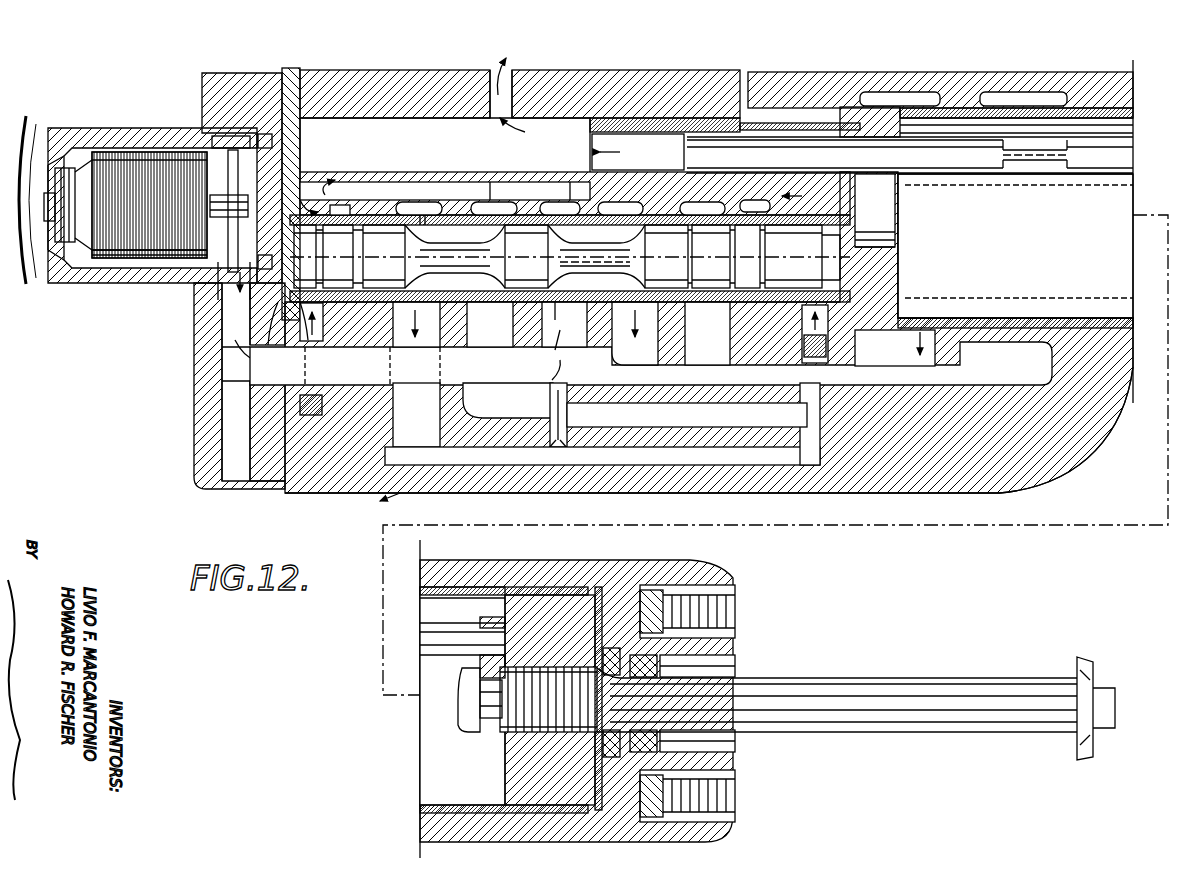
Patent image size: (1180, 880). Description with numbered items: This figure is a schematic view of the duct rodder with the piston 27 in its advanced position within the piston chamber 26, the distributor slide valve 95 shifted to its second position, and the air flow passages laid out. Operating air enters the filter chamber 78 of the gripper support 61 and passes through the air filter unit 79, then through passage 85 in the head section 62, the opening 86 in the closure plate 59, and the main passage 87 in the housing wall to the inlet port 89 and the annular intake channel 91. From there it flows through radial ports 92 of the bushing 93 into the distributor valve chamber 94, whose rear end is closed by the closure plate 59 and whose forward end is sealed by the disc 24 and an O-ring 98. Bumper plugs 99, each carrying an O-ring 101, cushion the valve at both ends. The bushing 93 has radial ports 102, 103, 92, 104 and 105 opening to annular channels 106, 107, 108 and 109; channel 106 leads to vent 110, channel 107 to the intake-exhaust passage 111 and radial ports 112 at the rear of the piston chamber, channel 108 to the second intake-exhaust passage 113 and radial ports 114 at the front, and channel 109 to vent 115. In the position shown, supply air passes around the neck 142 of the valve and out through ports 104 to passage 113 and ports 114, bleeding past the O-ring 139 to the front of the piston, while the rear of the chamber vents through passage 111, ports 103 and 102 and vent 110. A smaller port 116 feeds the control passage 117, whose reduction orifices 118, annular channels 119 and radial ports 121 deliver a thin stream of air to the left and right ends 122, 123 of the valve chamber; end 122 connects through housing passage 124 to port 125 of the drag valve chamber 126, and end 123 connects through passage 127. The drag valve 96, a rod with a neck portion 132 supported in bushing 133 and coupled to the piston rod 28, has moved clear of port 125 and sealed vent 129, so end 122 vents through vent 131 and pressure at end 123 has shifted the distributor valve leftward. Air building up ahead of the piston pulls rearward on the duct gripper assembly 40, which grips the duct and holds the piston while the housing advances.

The disc 24 is at (905, 262).
The piston chamber 26 is at (1128, 205).
The piston 27 is at (505, 772).
The piston rod 28 is at (872, 690).
The duct gripper assembly 40 is at (1078, 755).
The closure plate 59 is at (262, 72).
The gripper support 61 is at (82, 283).
The head section 62 is at (194, 438).
The filter chamber 78 is at (98, 150).
The air filter unit 79 is at (130, 260).
The passage 85 is at (222, 326).
The opening 86 is at (262, 374).
The main passage 87 is at (385, 383).
The inlet port 89 is at (540, 350).
The intake channel 91 is at (556, 195).
The radial ports 92 is at (552, 206).
The bushing 93 is at (350, 208).
The distributor valve chamber 94 is at (348, 316).
The distributor slide valve 95 is at (540, 264).
The drag valve 96 is at (850, 156).
The O-ring 98 is at (848, 206).
The bumper plugs 99 is at (350, 262).
The O-ring 101 is at (728, 318).
The radial ports 102 is at (428, 206).
The radial ports 103 is at (496, 207).
The radial ports 104 is at (640, 232).
The radial ports 105 is at (722, 196).
The annular channel 106 is at (396, 205).
The annular channel 107 is at (482, 186).
The annular channel 108 is at (616, 210).
The annular channel 109 is at (705, 210).
The vent 110 is at (432, 488).
The intake-exhaust passage 111 is at (632, 418).
The radial ports 112 is at (925, 320).
The intake-exhaust passage 113 is at (1020, 340).
The radial ports 114 is at (575, 813).
The vent 115 is at (722, 490).
The port 116 is at (548, 412).
The control passage 117 is at (560, 462).
The reduction orifices 118 is at (828, 350).
The annular channels 119 is at (300, 295).
The radial ports 121 is at (812, 300).
The left end of valve chamber 122 is at (296, 228).
The right end of valve chamber 123 is at (846, 226).
The housing passage 124 is at (342, 182).
The port 125 is at (635, 178).
The drag valve chamber 126 is at (372, 120).
The passage 127 is at (805, 182).
The vent 129 is at (744, 82).
The vent 131 is at (510, 70).
The neck portion 132 is at (1025, 172).
The bushing 133 is at (632, 118).
The O-ring 139 is at (540, 800).
The neck 142 is at (644, 268).